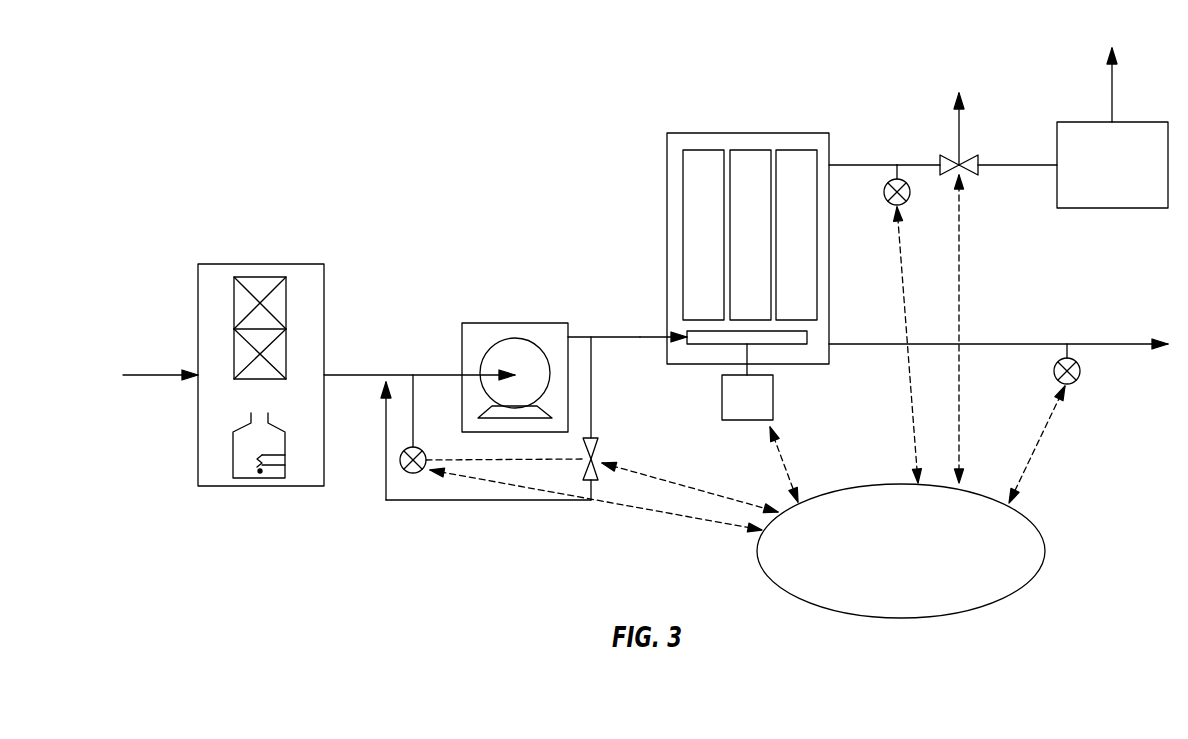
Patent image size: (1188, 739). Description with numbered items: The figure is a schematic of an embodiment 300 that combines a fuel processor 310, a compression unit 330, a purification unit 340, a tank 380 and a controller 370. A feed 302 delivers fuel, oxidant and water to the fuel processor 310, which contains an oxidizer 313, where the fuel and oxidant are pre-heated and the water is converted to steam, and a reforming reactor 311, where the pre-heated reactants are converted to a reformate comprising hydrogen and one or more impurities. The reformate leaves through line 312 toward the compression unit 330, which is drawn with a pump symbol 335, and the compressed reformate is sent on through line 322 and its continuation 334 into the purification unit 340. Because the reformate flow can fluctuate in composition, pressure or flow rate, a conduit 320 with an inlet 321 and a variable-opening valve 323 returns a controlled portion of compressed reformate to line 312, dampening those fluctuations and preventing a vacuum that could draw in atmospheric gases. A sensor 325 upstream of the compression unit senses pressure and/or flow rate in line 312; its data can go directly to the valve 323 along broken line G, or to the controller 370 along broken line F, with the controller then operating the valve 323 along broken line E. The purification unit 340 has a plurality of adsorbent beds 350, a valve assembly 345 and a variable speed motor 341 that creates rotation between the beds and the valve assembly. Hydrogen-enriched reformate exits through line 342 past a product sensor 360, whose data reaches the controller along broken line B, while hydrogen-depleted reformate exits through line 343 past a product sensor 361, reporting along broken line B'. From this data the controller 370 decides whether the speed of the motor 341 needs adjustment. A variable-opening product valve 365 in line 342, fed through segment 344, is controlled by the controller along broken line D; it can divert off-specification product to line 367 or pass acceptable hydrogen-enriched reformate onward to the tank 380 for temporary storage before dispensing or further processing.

The embodiment 300 is at (460, 164).
The feed 302 is at (158, 375).
The fuel processor 310 is at (222, 478).
The reforming reactor 311 is at (273, 305).
The line 312 is at (357, 378).
The oxidizer 313 is at (245, 443).
The conduit 320 is at (420, 500).
The inlet 321 is at (593, 340).
The gas line 322 is at (575, 335).
The variable-opening valve 323 is at (598, 445).
The sensor 325 is at (386, 470).
The compression unit 330 is at (475, 337).
The inlet line to heater 334 is at (655, 333).
The pump 335 is at (520, 350).
The purification unit 340 is at (667, 180).
The variable speed motor 341 is at (747, 382).
The line 342 is at (845, 163).
The line 343 is at (1090, 343).
The line to valve 344 is at (922, 165).
The valve assembly 345 is at (795, 338).
The adsorbent beds 350 is at (750, 158).
The product sensor 360 is at (882, 195).
The product sensor 361 is at (1082, 375).
The product valve 365 is at (970, 172).
The line 367 is at (962, 135).
The controller 370 is at (901, 551).
The tank 380 is at (1073, 128).
The broken line B is at (893, 345).
The broken line D is at (962, 302).
The broken line B' is at (1045, 444).
The broken line E is at (688, 487).
The broken line F is at (655, 512).
The broken line G is at (520, 458).